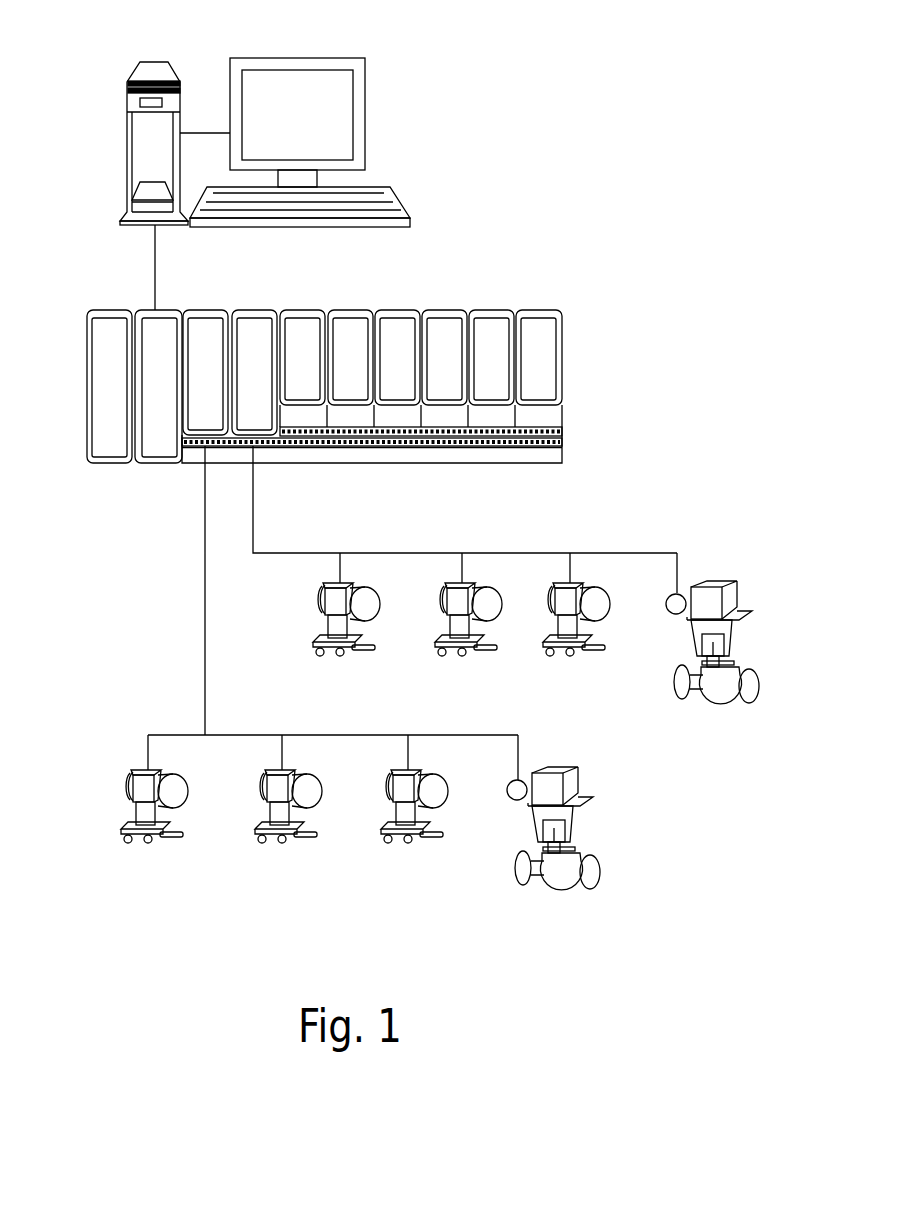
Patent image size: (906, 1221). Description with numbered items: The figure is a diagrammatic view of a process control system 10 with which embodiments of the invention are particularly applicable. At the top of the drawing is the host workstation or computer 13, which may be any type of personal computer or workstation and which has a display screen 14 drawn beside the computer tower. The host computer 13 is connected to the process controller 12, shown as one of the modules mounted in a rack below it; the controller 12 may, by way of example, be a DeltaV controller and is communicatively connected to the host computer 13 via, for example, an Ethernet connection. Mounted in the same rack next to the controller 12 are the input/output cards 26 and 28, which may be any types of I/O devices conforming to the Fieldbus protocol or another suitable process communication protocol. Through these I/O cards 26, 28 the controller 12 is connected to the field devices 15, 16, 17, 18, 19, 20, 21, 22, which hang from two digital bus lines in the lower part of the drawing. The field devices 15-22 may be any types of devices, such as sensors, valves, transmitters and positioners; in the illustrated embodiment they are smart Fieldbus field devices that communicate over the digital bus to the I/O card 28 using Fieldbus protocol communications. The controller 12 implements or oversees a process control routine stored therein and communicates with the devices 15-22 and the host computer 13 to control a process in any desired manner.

The process control system 10 is at (532, 186).
The process controller 12 is at (153, 327).
The host workstation or computer 13 is at (127, 98).
The display screen 14 is at (365, 95).
The field device 15 is at (147, 817).
The field device 16 is at (282, 817).
The field device 17 is at (408, 817).
The field device 18 is at (566, 877).
The field device 19 is at (350, 580).
The field device 20 is at (470, 582).
The field device 21 is at (577, 582).
The field device 22 is at (713, 582).
The input/output (I/O) card 26 is at (210, 308).
The input/output (I/O) card 28 is at (257, 308).